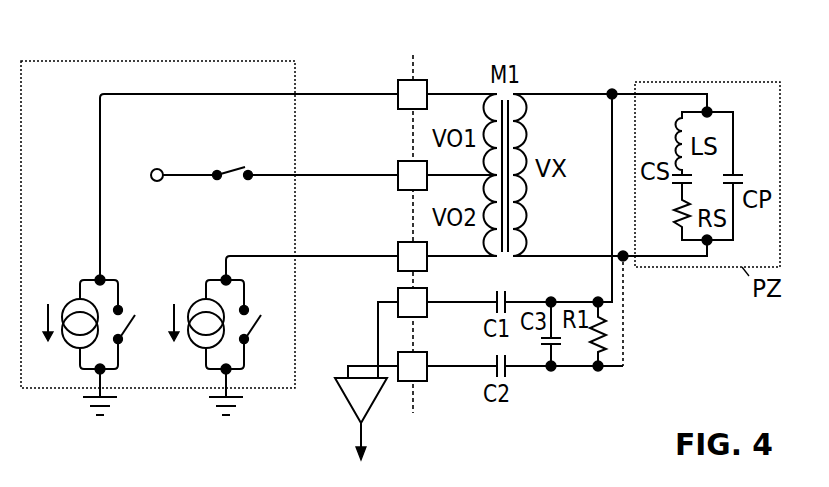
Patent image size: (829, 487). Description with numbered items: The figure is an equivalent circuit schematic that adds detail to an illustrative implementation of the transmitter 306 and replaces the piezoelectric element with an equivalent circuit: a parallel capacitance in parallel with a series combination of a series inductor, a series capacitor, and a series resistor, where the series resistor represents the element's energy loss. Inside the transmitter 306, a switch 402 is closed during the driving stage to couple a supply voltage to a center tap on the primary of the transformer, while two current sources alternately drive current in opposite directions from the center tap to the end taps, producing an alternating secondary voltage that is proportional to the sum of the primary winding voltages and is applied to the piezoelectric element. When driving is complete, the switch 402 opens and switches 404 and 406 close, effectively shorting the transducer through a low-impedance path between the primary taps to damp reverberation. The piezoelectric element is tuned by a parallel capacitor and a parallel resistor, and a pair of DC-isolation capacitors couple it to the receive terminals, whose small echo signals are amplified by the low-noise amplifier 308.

The transmitter 306 is at (135, 61).
The switch 402 is at (229, 171).
The switch 404 is at (139, 340).
The switch 406 is at (265, 340).
The low-noise amplifier 308 is at (352, 406).